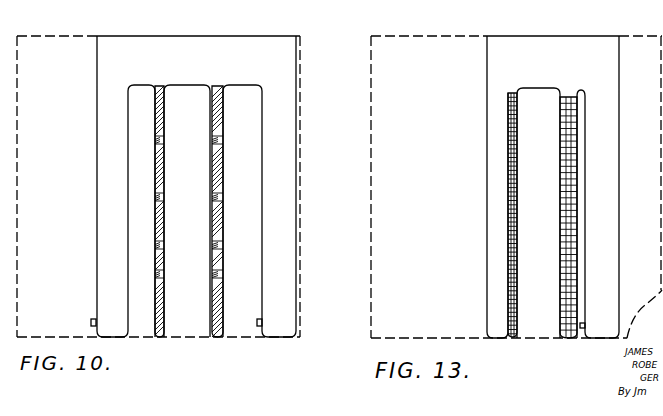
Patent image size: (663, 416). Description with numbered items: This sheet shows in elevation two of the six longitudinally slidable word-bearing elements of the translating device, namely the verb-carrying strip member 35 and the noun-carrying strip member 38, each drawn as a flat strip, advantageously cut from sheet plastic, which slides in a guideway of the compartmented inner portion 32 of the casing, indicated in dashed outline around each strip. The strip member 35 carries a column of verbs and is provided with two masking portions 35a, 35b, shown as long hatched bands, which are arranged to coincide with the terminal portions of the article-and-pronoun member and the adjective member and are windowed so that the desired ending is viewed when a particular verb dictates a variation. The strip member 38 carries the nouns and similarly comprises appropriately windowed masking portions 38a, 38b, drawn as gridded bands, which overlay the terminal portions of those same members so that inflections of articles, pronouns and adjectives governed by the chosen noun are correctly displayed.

In FIG. 10, the inner portion of the casing 32 is at (302, 77).
In FIG. 13, the inner portion of the casing 32 is at (370, 148).
In FIG. 10, the verb-carrying strip member 35 is at (230, 42).
In FIG. 10, the first masking portion of the verb member 35a is at (153, 338).
In FIG. 10, the second masking portion of the verb member 35b is at (216, 338).
In FIG. 13, the noun-carrying strip member 38 is at (599, 44).
In FIG. 13, the first windowed masking portion of the noun member 38a is at (512, 339).
In FIG. 13, the second windowed masking portion of the noun member 38b is at (561, 339).